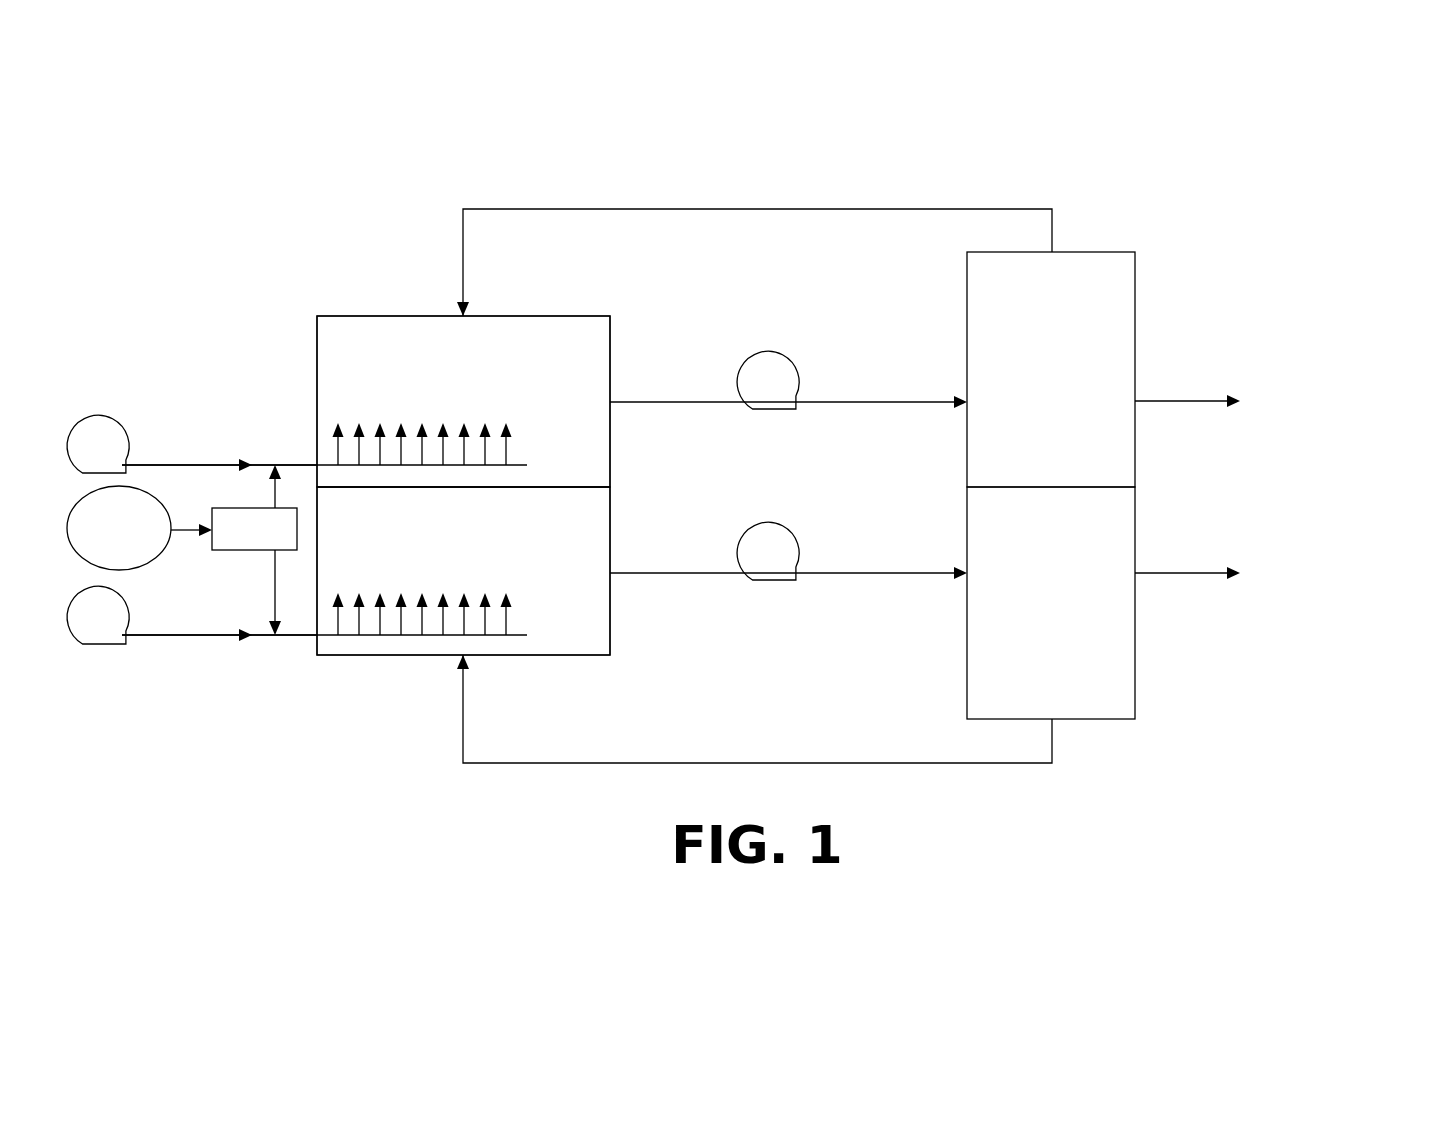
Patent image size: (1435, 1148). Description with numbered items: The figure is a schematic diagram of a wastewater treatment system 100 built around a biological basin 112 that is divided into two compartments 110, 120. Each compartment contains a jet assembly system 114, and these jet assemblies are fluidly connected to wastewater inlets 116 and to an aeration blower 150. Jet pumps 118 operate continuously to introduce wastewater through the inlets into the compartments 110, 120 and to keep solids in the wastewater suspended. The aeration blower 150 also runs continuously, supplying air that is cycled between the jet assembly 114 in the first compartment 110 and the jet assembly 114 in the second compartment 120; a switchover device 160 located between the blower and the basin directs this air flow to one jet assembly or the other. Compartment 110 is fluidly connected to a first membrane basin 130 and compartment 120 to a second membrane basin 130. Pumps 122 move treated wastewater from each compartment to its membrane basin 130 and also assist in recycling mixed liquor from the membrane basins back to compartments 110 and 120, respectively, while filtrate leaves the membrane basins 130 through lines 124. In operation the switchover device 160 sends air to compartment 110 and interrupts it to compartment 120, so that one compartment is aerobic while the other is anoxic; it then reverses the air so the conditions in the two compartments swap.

The treatment system 100 is at (1272, 638).
The compartment 110 is at (463, 401).
The biological basin 112 is at (358, 316).
The jet assembly system 114 is at (527, 465).
The wastewater inlet 116 is at (190, 465).
The jet pump 118 is at (98, 415).
The compartment 120 is at (463, 571).
The pump 122 is at (768, 351).
The line 124 is at (1178, 401).
The membrane basin 130 is at (796, 486).
The aeration blower 150 is at (139, 528).
The switchover device 160 is at (254, 550).